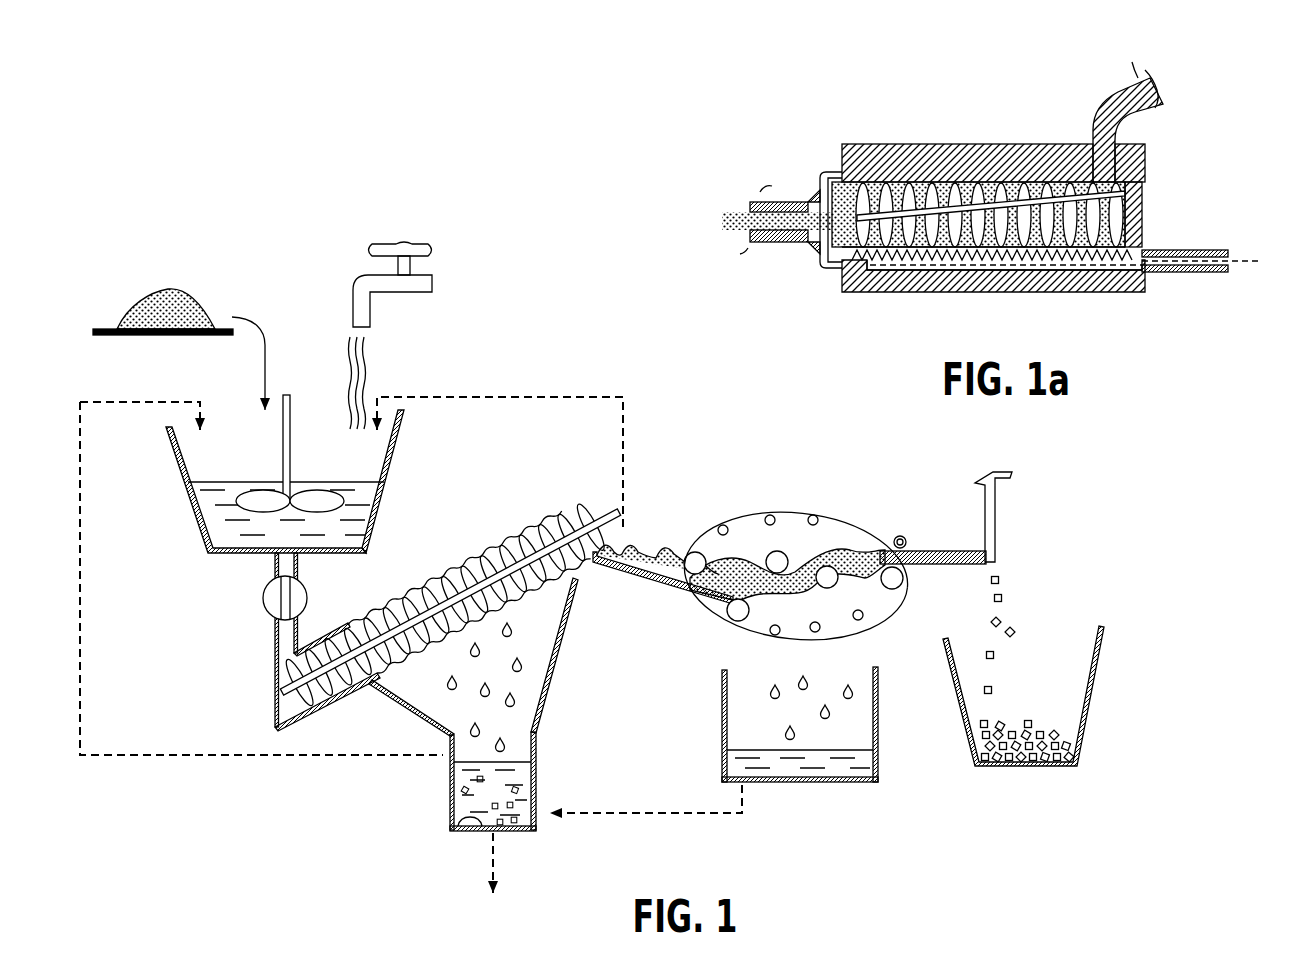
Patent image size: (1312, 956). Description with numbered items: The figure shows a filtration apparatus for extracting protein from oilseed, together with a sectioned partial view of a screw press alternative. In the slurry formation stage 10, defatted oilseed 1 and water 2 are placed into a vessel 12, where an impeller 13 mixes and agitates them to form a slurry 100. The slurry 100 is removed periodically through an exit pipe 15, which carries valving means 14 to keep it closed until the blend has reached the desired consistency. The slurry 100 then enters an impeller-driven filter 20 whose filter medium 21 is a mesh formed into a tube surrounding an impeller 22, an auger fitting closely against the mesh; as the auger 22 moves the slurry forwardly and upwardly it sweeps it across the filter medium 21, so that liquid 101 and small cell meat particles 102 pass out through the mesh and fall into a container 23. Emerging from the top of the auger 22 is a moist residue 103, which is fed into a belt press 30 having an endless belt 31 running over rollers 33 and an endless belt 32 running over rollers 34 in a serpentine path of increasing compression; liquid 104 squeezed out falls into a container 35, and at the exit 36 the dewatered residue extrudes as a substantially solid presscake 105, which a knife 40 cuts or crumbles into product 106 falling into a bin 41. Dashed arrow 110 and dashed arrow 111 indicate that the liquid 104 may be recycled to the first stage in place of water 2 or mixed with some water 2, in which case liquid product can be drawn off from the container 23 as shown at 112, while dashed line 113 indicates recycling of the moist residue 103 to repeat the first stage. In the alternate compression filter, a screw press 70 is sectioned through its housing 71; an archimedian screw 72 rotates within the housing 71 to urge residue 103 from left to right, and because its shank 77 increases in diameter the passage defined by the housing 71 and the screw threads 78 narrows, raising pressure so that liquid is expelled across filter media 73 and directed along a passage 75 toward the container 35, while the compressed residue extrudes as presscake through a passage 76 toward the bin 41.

In FIG. 1, the defatted oilseed 1 is at (150, 291).
In FIG. 1, the water 2 is at (366, 384).
In FIG. 1, the slurry formation stage 10 is at (178, 484).
In FIG. 1, the vessel 12 is at (386, 471).
In FIG. 1, the impeller 13 is at (290, 395).
In FIG. 1, the valving means 14 is at (263, 598).
In FIG. 1, the exit pipe 15 is at (275, 645).
In FIG. 1, the impeller-driven filter 20 is at (444, 560).
In FIG. 1, the filter medium 21 is at (518, 600).
In FIG. 1, the impeller 22 is at (525, 545).
In FIG. 1, the container 23 is at (536, 786).
In FIG. 1, the belt press 30 is at (818, 503).
In FIG. 1, the endless belt 31 is at (742, 515).
In FIG. 1, the endless belt 32 is at (840, 632).
In FIG. 1, the rollers 33 is at (776, 550).
In FIG. 1, the rollers 34 is at (728, 612).
In FIG. 1, the container 35 is at (880, 742).
In FIG. 1, the exit 36 is at (908, 540).
In FIG. 1, the knife 40 is at (1000, 499).
In FIG. 1, the bin 41 is at (1086, 700).
In FIG. 1, the slurry 100 is at (214, 536).
In FIG. 1, the liquid 101 is at (458, 790).
In FIG. 1, the cell meat particles 102 is at (455, 822).
In FIG. 1, the moist residue 103 is at (656, 560).
In FIG. 1a, the moist residue 103 is at (790, 222).
In FIG. 1, the liquid 104 is at (846, 784).
In FIG. 1, the presscake 105 is at (962, 566).
In FIG. 1a, the presscake 105 is at (1164, 90).
In FIG. 1, the product 106 is at (1040, 765).
In FIG. 1, the dashed arrow 110 is at (640, 814).
In FIG. 1, the dashed arrow 111 is at (176, 756).
In FIG. 1, the draw-off 112 is at (498, 862).
In FIG. 1, the dashed line 113 is at (524, 395).
In FIG. 1a, the screw press 70 is at (874, 300).
In FIG. 1a, the housing 71 is at (920, 293).
In FIG. 1a, the archimedian screw 72 is at (1152, 205).
In FIG. 1a, the filter media 73 is at (1100, 262).
In FIG. 1a, the passage 75 is at (1152, 252).
In FIG. 1a, the passage 76 is at (1098, 160).
In FIG. 1a, the shank 77 is at (964, 212).
In FIG. 1a, the screw threads 78 is at (888, 196).